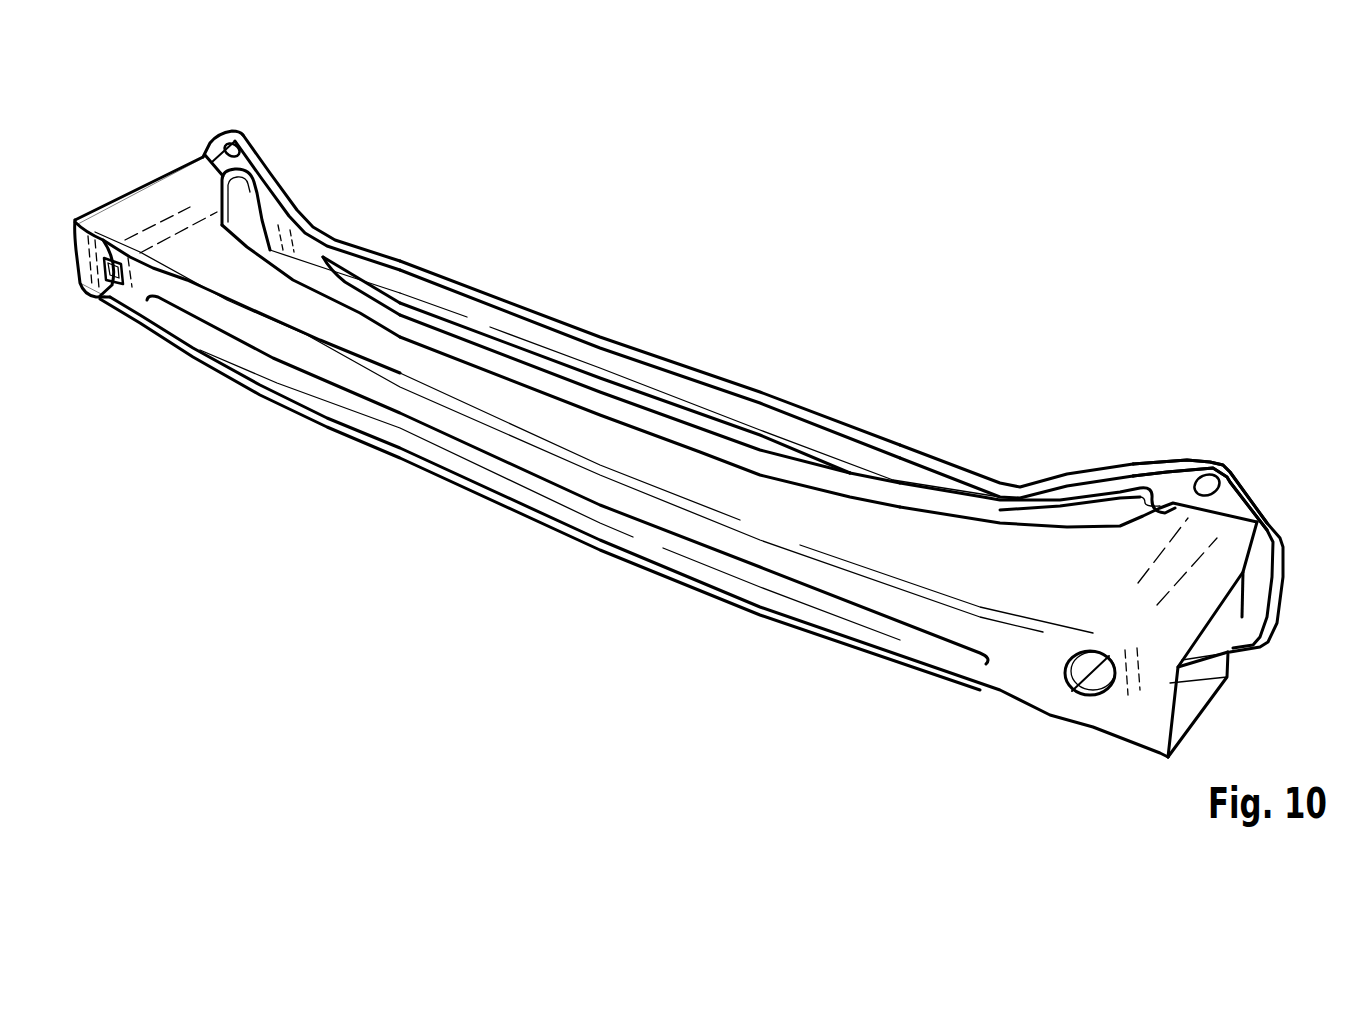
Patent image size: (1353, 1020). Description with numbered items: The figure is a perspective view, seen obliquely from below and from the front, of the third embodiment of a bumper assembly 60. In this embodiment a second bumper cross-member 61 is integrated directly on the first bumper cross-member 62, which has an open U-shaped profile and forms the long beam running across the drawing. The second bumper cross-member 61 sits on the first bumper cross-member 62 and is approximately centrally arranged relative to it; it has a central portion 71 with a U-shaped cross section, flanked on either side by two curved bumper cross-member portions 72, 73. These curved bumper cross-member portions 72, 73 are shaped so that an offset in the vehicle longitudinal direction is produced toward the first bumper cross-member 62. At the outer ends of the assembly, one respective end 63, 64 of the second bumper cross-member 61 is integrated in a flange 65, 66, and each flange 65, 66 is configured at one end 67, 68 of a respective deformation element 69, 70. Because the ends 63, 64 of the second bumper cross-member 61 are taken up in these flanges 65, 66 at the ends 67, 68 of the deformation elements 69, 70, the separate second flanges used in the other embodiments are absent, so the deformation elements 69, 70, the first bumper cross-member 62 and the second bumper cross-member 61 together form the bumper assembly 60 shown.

The bumper assembly 60 is at (443, 530).
The second bumper cross-member 61 is at (610, 340).
The first bumper cross-member 62 is at (540, 507).
The end of the second bumper cross-member 63 is at (271, 103).
The end of the second bumper cross-member 64 is at (1181, 442).
The flange 65 is at (258, 170).
The flange 66 is at (1172, 477).
The end of deformation element 67 is at (217, 167).
The end of deformation element 68 is at (1237, 530).
The deformation element 69 is at (132, 207).
The deformation element 70 is at (1205, 600).
The central portion 71 is at (610, 340).
The curved bumper cross-member portion 72 is at (290, 223).
The curved bumper cross-member portion 73 is at (1080, 490).